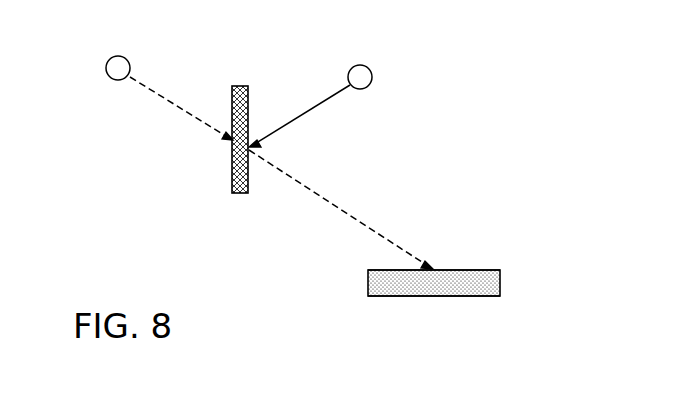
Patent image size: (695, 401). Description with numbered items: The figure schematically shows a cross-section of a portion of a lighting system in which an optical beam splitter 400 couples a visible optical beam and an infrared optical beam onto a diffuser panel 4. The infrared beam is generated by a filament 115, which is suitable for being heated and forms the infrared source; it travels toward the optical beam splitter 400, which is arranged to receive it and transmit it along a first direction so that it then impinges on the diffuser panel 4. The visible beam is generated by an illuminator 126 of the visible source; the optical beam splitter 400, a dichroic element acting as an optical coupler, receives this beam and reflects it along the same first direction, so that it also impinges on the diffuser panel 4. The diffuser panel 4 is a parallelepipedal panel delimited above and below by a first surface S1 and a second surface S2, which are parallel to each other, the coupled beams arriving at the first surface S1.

The filament 115 is at (109, 60).
The illuminator 126 is at (362, 65).
The optical beam splitter 400 is at (238, 86).
The diffuser panel 4 is at (390, 285).
The first surface S1 is at (466, 262).
The second surface S2 is at (478, 297).